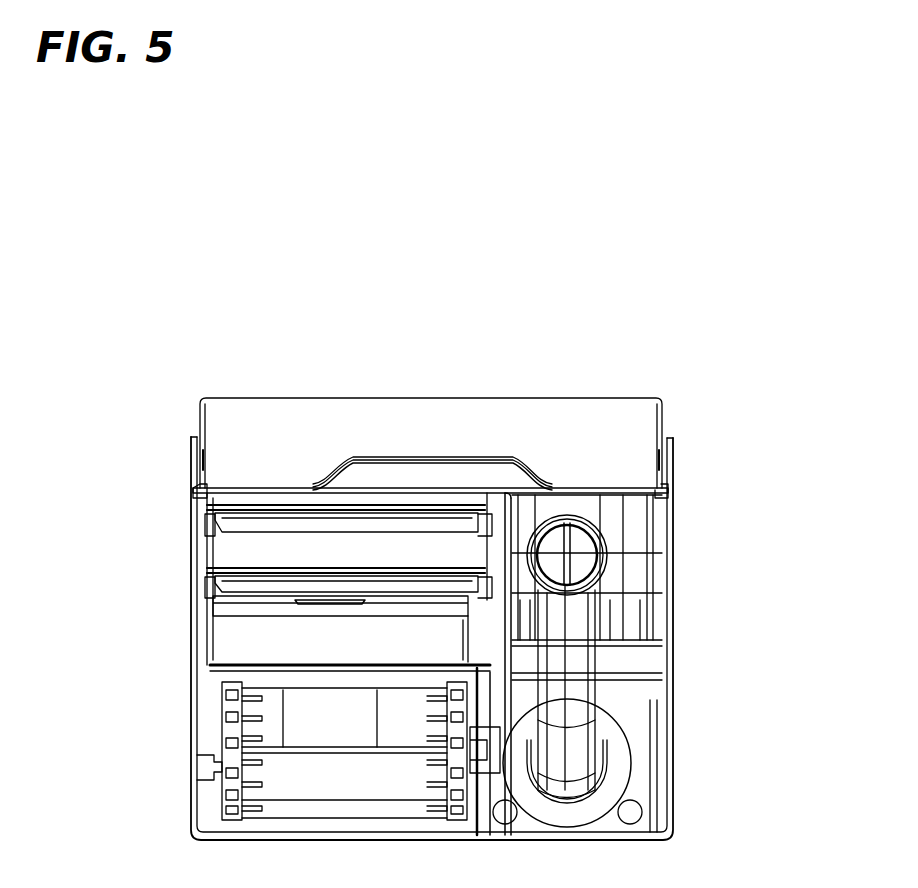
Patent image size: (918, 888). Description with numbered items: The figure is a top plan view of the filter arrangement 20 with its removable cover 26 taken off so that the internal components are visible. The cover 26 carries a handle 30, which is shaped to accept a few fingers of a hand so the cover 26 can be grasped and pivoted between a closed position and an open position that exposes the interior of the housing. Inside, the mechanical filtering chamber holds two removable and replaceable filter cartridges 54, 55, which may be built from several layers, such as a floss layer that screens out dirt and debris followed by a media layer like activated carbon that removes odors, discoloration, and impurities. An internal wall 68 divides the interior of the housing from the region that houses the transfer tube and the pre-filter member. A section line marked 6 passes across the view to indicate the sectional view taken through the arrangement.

The appliance housing assembly 20 is at (672, 283).
The cover 26 is at (229, 408).
The handle 30 is at (400, 472).
The filter cartridge 54 is at (247, 536).
The filter cartridge 55 is at (254, 606).
The internal wall 68 is at (507, 495).
The section line for FIG. 6 is at (158, 602).